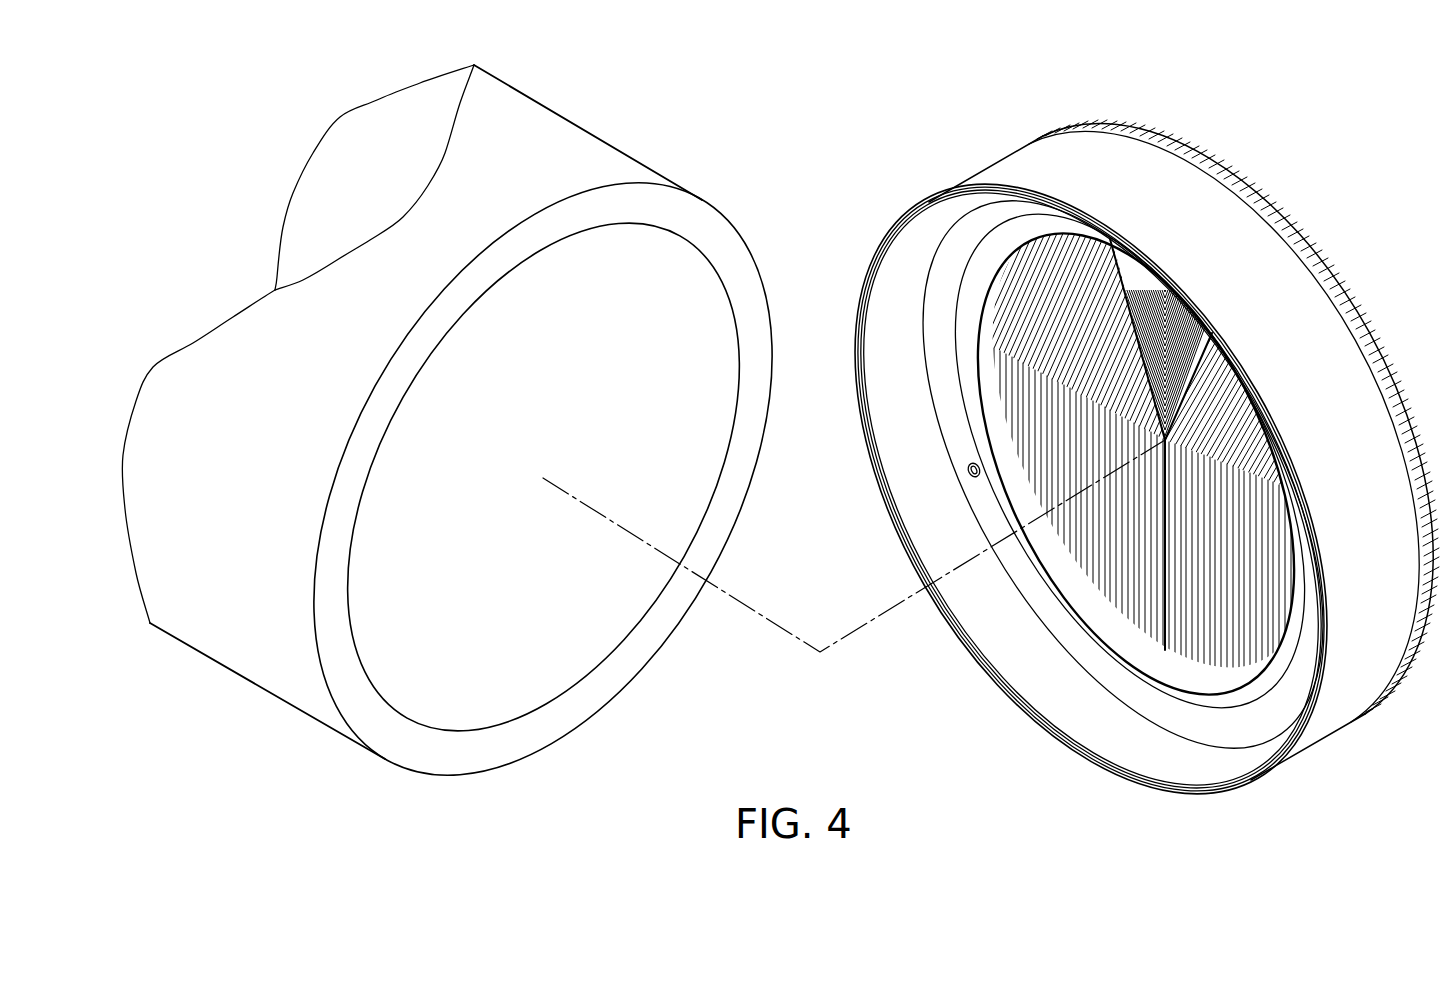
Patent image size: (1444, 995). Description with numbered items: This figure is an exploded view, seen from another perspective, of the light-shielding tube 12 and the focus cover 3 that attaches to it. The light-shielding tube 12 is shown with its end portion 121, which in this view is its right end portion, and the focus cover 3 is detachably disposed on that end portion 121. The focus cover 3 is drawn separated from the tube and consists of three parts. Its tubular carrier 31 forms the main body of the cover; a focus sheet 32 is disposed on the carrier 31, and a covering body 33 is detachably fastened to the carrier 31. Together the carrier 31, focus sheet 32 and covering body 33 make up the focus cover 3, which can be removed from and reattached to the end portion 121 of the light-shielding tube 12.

The light-shielding tube 12 is at (494, 457).
The end portion 121 is at (633, 177).
The focus cover 3 is at (1100, 488).
The tubular carrier 31 is at (1007, 172).
The focus sheet 32 is at (985, 315).
The covering body 33 is at (1373, 345).